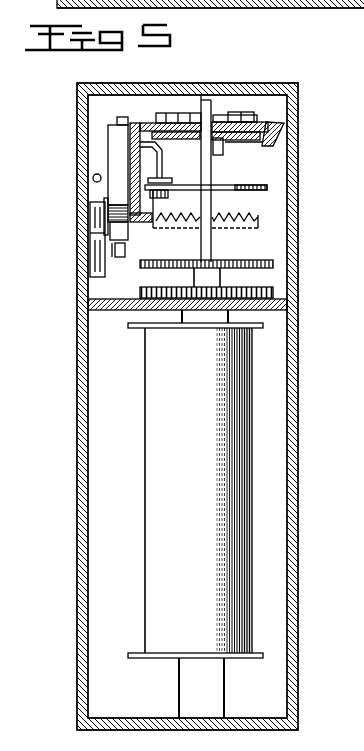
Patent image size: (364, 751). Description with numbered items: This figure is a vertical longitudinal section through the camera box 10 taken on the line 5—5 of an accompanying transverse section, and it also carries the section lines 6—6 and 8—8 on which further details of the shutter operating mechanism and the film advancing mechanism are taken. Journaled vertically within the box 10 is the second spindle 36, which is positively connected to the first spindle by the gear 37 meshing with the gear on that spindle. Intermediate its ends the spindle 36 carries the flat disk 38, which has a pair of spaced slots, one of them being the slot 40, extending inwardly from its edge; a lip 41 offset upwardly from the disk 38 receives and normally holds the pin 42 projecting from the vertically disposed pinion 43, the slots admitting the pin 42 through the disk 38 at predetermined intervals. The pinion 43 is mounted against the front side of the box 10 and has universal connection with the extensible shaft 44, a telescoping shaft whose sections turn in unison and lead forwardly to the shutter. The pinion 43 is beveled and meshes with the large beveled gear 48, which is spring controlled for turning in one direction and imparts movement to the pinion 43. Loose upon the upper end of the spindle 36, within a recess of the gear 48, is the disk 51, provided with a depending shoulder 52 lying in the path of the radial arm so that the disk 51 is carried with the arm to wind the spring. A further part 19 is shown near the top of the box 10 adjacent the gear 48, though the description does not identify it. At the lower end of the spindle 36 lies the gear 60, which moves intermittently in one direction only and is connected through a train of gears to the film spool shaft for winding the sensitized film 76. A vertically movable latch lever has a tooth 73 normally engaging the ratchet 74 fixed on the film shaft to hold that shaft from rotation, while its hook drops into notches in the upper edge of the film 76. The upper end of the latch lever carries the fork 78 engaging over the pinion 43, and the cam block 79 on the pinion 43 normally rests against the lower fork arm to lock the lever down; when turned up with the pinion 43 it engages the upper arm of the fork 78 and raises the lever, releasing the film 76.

The section line 5— 5 is at (230, 144).
The section line 6— 6 is at (108, 123).
The section line 8— 8 is at (332, 282).
The box 10 is at (298, 388).
The bracket 19 is at (238, 113).
The second spindle 36 is at (212, 254).
The gear 37 is at (206, 264).
The flat disk 38 is at (245, 185).
The slot 40 is at (176, 209).
The lip 41 is at (168, 187).
The pin 42 is at (130, 177).
The pinion 43 is at (118, 153).
The extensible shaft 44 is at (90, 245).
The beveled gear 48 is at (274, 126).
The disk 51 is at (186, 140).
The shoulder 52 is at (223, 150).
The gear 60 is at (140, 293).
The tooth 73 is at (123, 117).
The ratchet 74 is at (256, 220).
The sensitized film 76 is at (253, 462).
The fork 78 is at (126, 248).
The cam block 79 is at (118, 259).